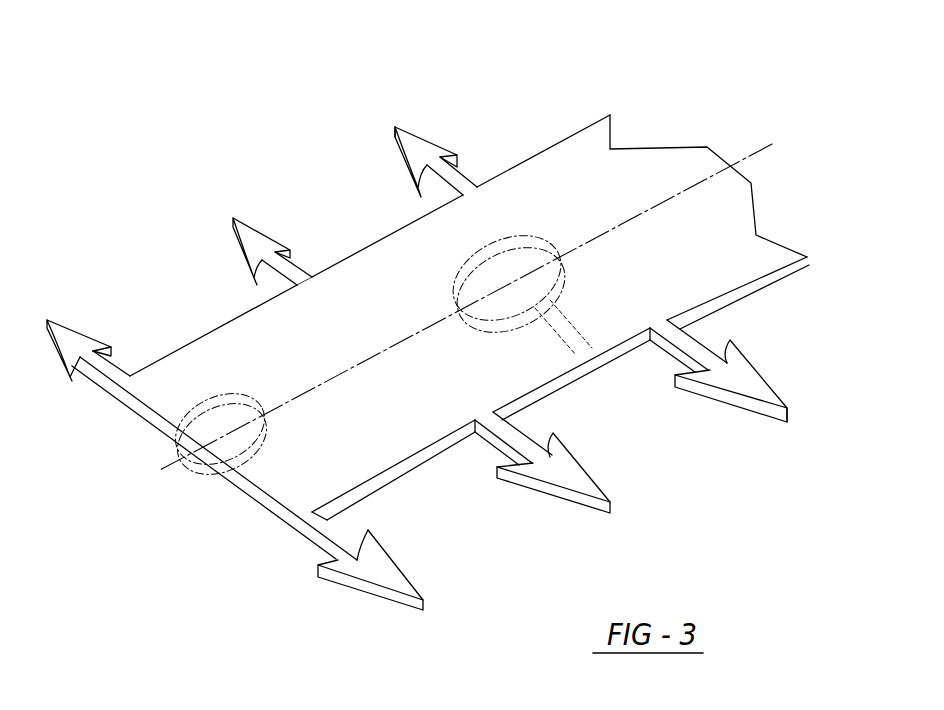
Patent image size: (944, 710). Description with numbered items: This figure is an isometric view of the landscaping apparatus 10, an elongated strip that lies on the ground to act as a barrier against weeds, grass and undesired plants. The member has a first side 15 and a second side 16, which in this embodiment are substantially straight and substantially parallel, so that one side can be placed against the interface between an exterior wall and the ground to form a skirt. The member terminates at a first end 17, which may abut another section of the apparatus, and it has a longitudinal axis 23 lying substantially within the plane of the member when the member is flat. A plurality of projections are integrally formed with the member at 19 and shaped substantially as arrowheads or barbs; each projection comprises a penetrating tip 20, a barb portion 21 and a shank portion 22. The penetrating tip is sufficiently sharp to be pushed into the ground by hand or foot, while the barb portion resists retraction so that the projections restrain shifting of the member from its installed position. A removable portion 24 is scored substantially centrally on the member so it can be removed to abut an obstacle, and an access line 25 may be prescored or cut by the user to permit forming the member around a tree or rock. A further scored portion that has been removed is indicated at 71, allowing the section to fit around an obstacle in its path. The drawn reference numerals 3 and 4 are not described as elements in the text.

The landscaping apparatus 10 is at (205, 102).
The plate 3 is at (235, 338).
The plate underside 4 is at (432, 504).
The first side 15 is at (573, 136).
The second side 16 is at (747, 294).
The first end 17 is at (265, 503).
The integral formation location 19 is at (303, 277).
The penetrating tip 20 is at (395, 127).
The barb portion 21 is at (442, 150).
The shank portion 22 is at (466, 174).
The longitudinal axis 23 is at (158, 469).
The removable portion 24 is at (468, 267).
The access line 25 is at (575, 337).
The removed scored portion 71 is at (207, 403).